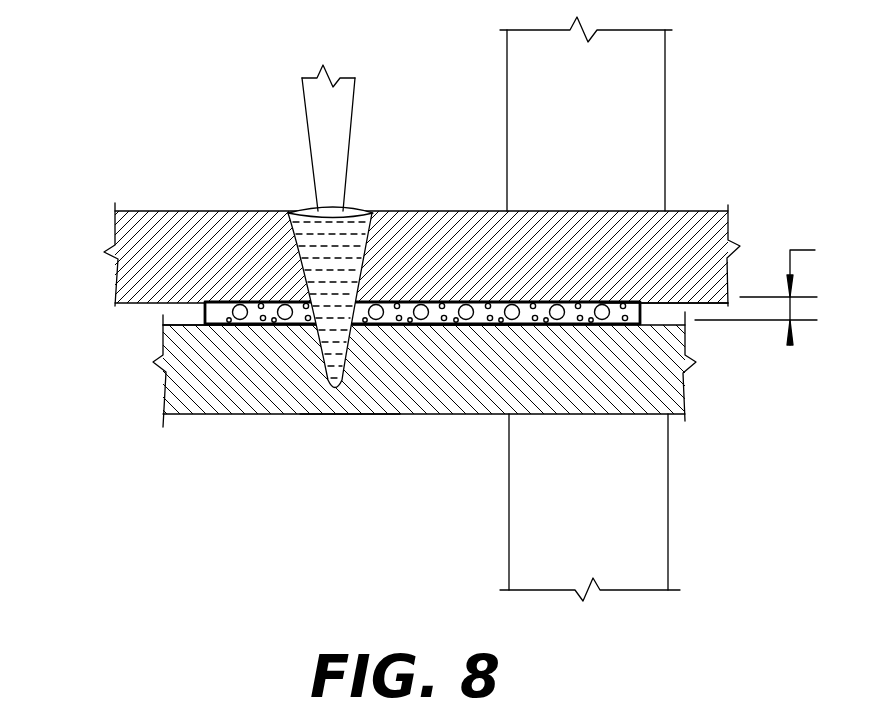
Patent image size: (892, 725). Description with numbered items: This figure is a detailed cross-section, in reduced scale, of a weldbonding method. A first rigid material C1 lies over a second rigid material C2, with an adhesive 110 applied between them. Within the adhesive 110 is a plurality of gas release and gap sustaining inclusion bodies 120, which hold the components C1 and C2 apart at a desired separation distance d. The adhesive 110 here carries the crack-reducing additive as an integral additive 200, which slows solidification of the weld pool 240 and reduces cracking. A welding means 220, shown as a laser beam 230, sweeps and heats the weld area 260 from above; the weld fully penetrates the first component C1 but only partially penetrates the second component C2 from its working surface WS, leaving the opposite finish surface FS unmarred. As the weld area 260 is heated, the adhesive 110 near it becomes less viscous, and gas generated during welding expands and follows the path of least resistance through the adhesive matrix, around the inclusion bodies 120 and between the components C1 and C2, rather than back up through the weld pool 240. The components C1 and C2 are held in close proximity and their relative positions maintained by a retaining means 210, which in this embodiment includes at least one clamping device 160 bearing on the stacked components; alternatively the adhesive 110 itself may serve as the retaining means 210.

The adhesive 110 is at (641, 307).
The gas release and gap sustaining inclusion bodies 120 is at (455, 325).
The clamping device 160 is at (665, 103).
The integral additive 200 is at (205, 310).
The retaining means 210 is at (464, 536).
The welding means 220 is at (317, 224).
The laser beam 230 is at (357, 78).
The weld pool 240 is at (302, 208).
The weld area 260 is at (376, 172).
The first rigid material C1 is at (225, 221).
The second rigid material C2 is at (217, 415).
The working surface WS is at (193, 325).
The finish surface FS is at (345, 414).
The separation distance d is at (769, 286).